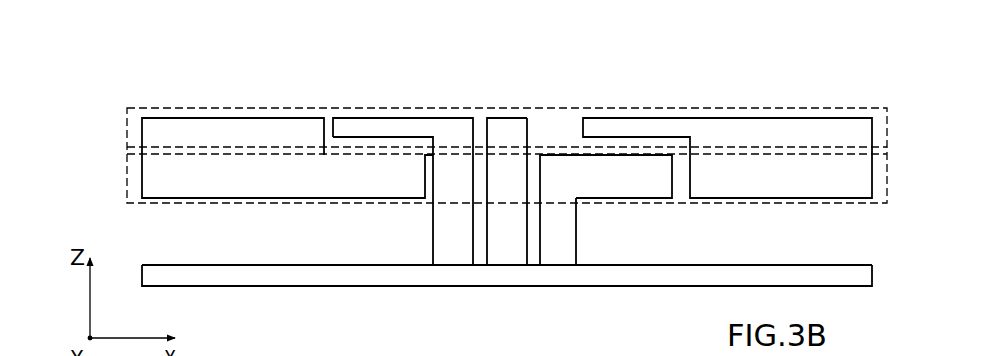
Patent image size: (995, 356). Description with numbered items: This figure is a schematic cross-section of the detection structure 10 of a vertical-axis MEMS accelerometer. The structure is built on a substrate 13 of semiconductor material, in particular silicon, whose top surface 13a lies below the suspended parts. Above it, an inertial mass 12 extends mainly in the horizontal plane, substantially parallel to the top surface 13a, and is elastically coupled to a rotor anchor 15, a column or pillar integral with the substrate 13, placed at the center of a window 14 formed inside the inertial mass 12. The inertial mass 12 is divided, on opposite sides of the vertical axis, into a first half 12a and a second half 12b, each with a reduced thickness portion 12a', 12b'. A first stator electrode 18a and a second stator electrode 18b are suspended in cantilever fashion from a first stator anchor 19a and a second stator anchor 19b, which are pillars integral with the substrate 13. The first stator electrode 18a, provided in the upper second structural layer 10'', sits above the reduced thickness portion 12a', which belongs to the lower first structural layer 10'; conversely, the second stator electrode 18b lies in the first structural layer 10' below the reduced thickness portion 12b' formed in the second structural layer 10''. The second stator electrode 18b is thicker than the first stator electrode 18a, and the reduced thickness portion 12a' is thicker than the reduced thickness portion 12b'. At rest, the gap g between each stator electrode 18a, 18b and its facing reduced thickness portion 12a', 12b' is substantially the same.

The detection structure 10 is at (501, 123).
The first structural layer 10' is at (474, 171).
The second structural layer 10'' is at (475, 109).
The inertial mass 12 is at (511, 180).
The first half of the inertial mass 12a is at (233, 97).
The reduced thickness portion of the first half 12a' is at (287, 237).
The second half of the inertial mass 12b is at (727, 118).
The reduced thickness portion of the second half 12b' is at (624, 120).
The substrate 13 is at (532, 257).
The top surface of the substrate 13a is at (813, 260).
The window 14 is at (482, 127).
The rotor anchor 15 is at (503, 258).
The first stator electrode 18a is at (390, 128).
The second stator electrode 18b is at (599, 120).
The first stator anchor 19a is at (450, 253).
The second stator anchor 19b is at (550, 250).
The gap g is at (360, 148).